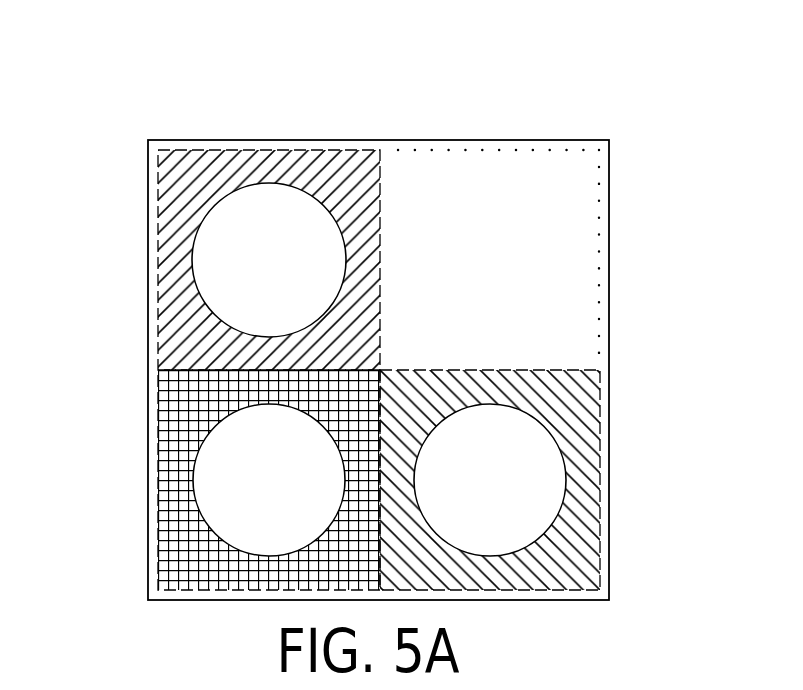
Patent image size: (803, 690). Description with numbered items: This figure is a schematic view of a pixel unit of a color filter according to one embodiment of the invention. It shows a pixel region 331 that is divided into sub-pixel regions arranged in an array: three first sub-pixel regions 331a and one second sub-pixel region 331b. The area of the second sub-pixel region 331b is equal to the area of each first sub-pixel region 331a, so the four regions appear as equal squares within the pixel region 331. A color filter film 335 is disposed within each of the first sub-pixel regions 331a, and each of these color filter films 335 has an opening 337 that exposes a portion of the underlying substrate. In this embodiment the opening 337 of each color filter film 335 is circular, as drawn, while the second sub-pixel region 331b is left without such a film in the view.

The pixel region 331 is at (383, 304).
The first sub-pixel region 331a is at (383, 326).
The second sub-pixel region 331b is at (499, 208).
The color filter film 335 is at (172, 267).
The opening 337 is at (230, 228).